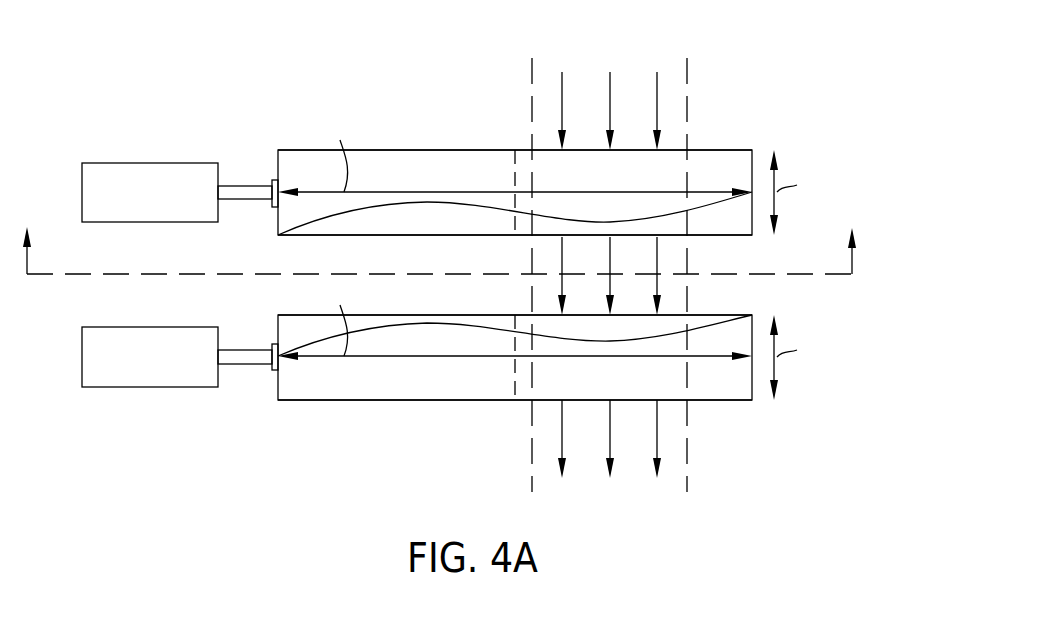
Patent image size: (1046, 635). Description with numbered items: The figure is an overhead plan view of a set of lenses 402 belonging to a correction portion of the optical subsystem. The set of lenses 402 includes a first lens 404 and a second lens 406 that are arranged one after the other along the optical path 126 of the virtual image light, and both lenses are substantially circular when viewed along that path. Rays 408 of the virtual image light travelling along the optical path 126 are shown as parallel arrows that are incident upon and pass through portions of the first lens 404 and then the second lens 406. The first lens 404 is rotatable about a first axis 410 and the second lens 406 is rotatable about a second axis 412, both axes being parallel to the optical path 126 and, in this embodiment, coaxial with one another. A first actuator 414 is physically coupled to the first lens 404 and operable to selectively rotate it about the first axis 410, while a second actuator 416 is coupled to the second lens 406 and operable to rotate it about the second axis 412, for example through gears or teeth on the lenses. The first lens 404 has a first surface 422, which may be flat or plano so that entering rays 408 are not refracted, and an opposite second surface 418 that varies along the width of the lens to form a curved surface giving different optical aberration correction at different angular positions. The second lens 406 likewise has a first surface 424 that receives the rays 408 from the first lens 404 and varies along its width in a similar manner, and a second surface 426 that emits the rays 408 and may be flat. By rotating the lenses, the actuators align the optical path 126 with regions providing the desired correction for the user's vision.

The set of lenses 402 is at (828, 55).
The optical path 126 is at (680, 55).
The first lens 404 is at (768, 143).
The second lens 406 is at (768, 410).
The rays 408 is at (560, 103).
The first axis 410 is at (515, 158).
The second axis 412 is at (515, 322).
The first actuator 414 is at (150, 163).
The second actuator 416 is at (150, 327).
The second surface 418 is at (297, 235).
The first surface 422 is at (292, 150).
The first surface 424 is at (292, 315).
The second surface 426 is at (297, 400).